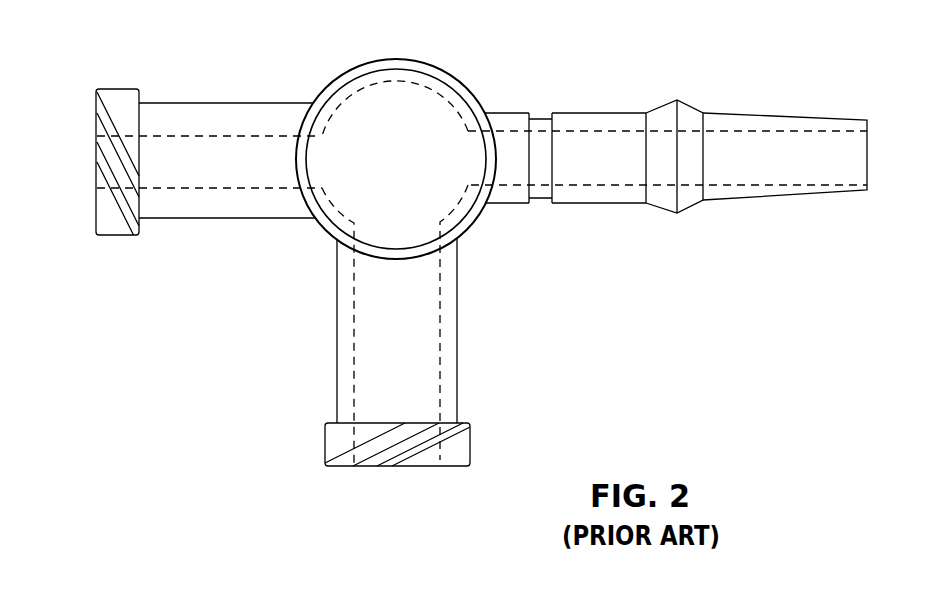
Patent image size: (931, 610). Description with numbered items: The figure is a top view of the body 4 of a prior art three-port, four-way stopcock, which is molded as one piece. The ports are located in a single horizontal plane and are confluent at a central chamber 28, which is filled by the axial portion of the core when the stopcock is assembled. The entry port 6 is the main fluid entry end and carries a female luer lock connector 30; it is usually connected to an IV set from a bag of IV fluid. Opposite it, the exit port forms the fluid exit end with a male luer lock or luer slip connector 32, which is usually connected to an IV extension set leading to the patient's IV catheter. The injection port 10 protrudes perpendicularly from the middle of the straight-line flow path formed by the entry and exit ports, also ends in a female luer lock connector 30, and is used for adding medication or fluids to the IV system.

The body 4 is at (412, 58).
The entry port 6 is at (95, 172).
The injection port 10 is at (432, 467).
The central chamber 28 is at (407, 150).
The female luer lock connector 30 is at (107, 237).
The male luer lock connector 32 is at (775, 200).